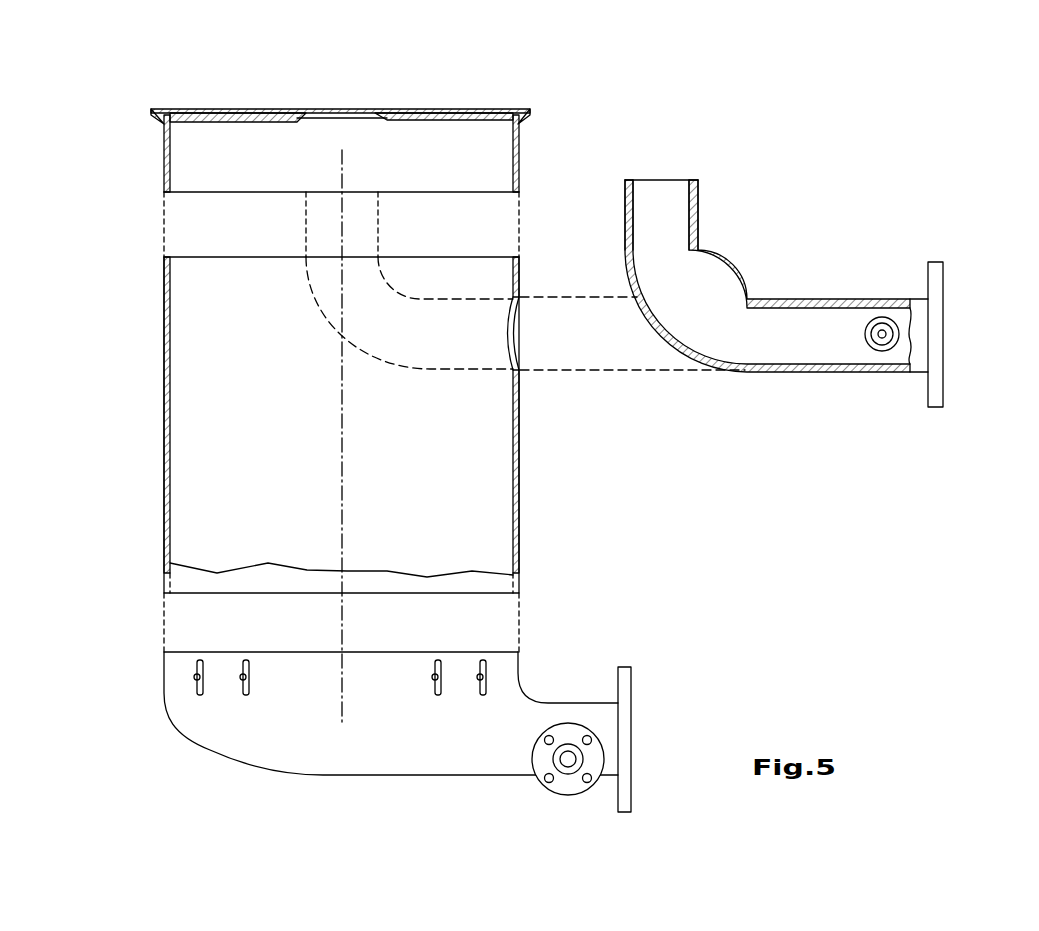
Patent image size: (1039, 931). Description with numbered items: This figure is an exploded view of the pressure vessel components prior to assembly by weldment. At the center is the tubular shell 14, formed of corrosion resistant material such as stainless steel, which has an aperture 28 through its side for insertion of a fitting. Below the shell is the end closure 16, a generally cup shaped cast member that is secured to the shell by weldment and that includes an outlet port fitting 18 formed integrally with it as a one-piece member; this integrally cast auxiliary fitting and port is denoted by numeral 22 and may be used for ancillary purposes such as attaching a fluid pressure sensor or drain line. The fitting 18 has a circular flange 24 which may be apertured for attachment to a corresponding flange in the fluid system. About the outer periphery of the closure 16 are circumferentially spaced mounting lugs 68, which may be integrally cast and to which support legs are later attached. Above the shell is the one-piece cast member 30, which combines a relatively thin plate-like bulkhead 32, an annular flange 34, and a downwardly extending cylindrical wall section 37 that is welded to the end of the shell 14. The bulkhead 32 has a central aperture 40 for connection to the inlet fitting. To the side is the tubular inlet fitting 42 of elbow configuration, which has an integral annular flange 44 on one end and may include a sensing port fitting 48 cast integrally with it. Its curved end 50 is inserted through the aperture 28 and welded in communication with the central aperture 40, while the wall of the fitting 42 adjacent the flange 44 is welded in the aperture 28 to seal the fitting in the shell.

The tubular shell 14 is at (156, 420).
The end closure 16 is at (415, 714).
The outlet port fitting 18 is at (580, 703).
The integrally cast fitting and port 22 is at (560, 793).
The circular flange 24 is at (632, 688).
The aperture 28 is at (513, 333).
The combination bulkhead and annular flange member 30 is at (337, 117).
The bulkhead 32 is at (222, 109).
The annular flange 34 is at (532, 109).
The cylindrical wall section 37 is at (163, 163).
The central aperture 40 is at (371, 109).
The tubular inlet fitting 42 is at (826, 267).
The annular flange 44 is at (943, 277).
The sensing port fitting 48 is at (866, 334).
The curved end of the inlet fitting 50 is at (699, 195).
The mounting lugs 68 is at (246, 660).